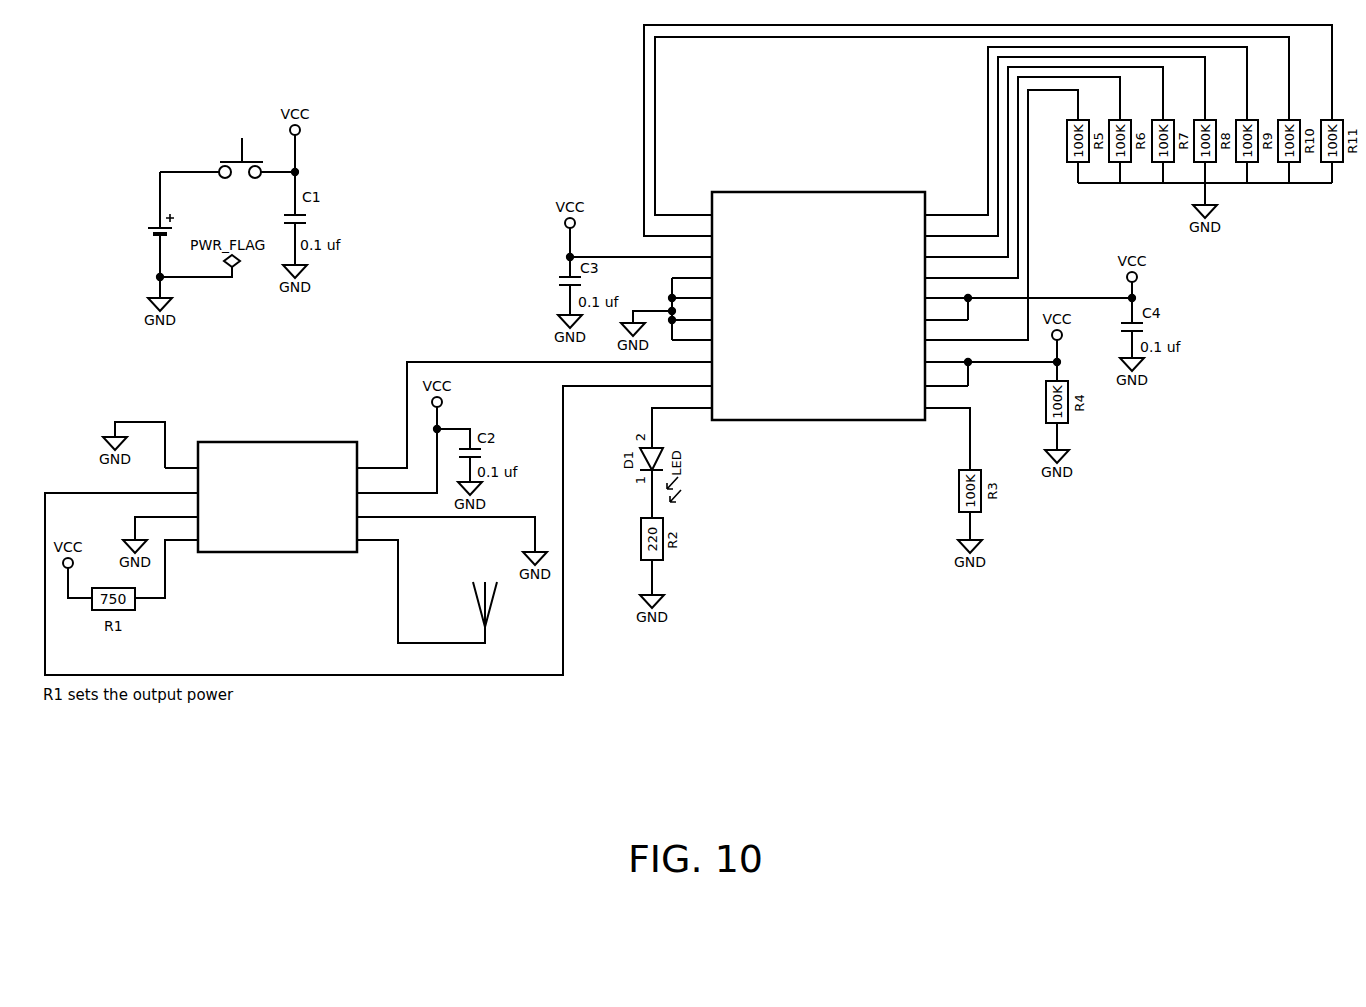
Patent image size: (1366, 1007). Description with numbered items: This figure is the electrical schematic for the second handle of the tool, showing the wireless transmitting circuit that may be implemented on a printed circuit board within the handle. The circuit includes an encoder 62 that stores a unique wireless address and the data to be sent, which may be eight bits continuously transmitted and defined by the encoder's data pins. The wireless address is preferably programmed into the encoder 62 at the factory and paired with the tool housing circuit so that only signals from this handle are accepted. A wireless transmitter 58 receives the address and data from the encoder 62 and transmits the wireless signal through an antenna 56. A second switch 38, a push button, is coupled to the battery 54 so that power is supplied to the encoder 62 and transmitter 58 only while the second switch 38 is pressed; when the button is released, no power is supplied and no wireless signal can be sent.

The second switch 38 is at (230, 153).
The battery 54 is at (114, 228).
The antenna 56 is at (493, 603).
The wireless transmitter 58 is at (338, 552).
The encoder 62 is at (902, 422).